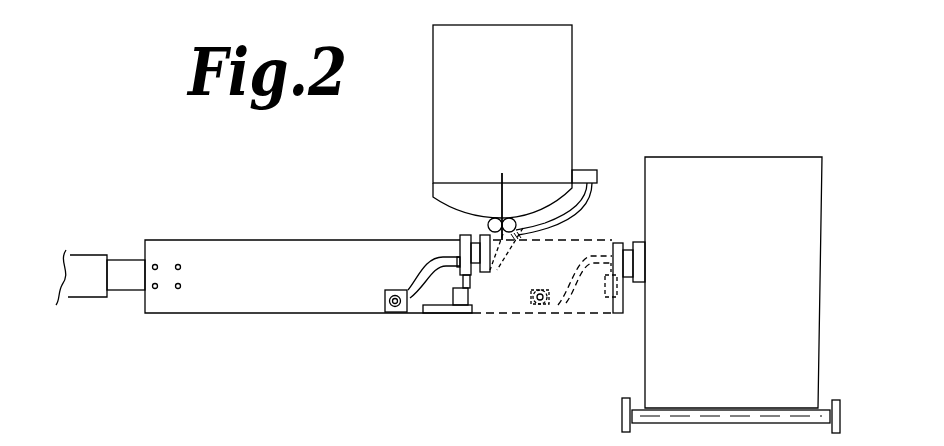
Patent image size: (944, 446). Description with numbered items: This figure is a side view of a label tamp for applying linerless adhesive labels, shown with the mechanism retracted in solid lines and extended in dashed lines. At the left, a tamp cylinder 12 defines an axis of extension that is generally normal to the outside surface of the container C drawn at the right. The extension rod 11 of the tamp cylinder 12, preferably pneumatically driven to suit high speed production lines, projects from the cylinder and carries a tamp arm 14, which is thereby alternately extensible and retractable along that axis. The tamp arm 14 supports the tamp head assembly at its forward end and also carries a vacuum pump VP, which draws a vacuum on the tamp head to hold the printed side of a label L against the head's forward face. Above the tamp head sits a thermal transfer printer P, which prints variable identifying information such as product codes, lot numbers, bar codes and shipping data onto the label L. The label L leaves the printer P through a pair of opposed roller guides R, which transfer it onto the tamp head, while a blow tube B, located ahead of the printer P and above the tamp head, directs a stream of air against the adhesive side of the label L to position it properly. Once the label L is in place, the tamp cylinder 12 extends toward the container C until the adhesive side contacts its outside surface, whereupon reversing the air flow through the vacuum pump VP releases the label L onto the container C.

The tamp cylinder 12 is at (83, 256).
The extension rod 11 is at (120, 261).
The tamp arm 14 is at (225, 239).
The thermal transfer printer P is at (527, 75).
The label L is at (504, 198).
The opposed roller guides R is at (488, 224).
The blow tube B is at (583, 207).
The vacuum pump VP is at (383, 290).
The container C is at (752, 299).